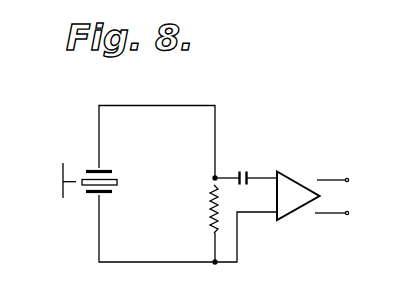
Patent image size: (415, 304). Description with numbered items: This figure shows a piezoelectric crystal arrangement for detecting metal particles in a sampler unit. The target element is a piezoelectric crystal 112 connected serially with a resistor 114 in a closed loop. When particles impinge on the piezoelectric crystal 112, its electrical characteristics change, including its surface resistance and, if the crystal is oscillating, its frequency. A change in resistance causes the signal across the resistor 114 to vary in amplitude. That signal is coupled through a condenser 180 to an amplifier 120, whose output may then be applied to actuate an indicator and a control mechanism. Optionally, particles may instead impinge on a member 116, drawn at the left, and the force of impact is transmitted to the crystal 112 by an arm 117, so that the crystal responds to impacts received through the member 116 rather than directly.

The piezoelectric crystal 112 is at (118, 183).
The resistor 114 is at (210, 210).
The member 116 is at (62, 184).
The arm 117 is at (68, 172).
The coupling capacitor 180 is at (241, 171).
The amplifier 120 is at (283, 172).